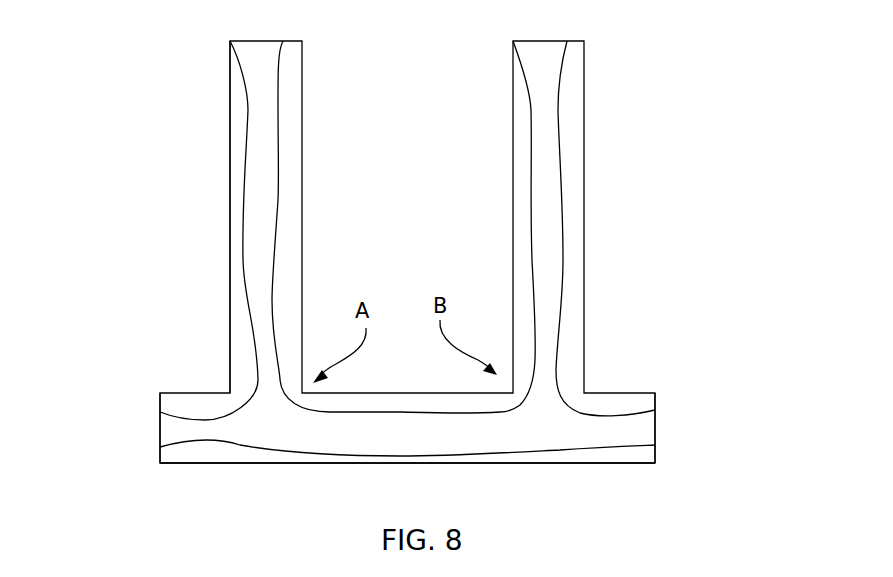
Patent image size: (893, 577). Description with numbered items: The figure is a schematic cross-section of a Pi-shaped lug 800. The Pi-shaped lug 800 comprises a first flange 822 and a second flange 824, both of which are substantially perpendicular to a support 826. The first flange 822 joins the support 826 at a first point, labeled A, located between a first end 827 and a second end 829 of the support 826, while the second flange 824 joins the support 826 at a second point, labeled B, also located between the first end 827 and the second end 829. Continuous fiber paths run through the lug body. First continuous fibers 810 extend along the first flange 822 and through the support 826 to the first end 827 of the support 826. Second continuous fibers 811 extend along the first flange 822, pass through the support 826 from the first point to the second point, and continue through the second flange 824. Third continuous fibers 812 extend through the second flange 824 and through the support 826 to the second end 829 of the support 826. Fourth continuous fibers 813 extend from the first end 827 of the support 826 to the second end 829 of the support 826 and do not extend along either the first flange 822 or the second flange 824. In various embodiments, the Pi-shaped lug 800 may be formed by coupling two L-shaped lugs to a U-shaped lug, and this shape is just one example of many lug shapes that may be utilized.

The Pi-shaped lug 800 is at (684, 74).
The first continuous fibers 810 is at (230, 162).
The second continuous fibers 811 is at (278, 104).
The third continuous fibers 812 is at (563, 213).
The second flange 824 is at (584, 145).
The first flange 822 is at (230, 268).
The fourth continuous fibers 813 is at (277, 450).
The first end 827 is at (160, 428).
The second end 829 is at (655, 424).
The support 826 is at (600, 463).